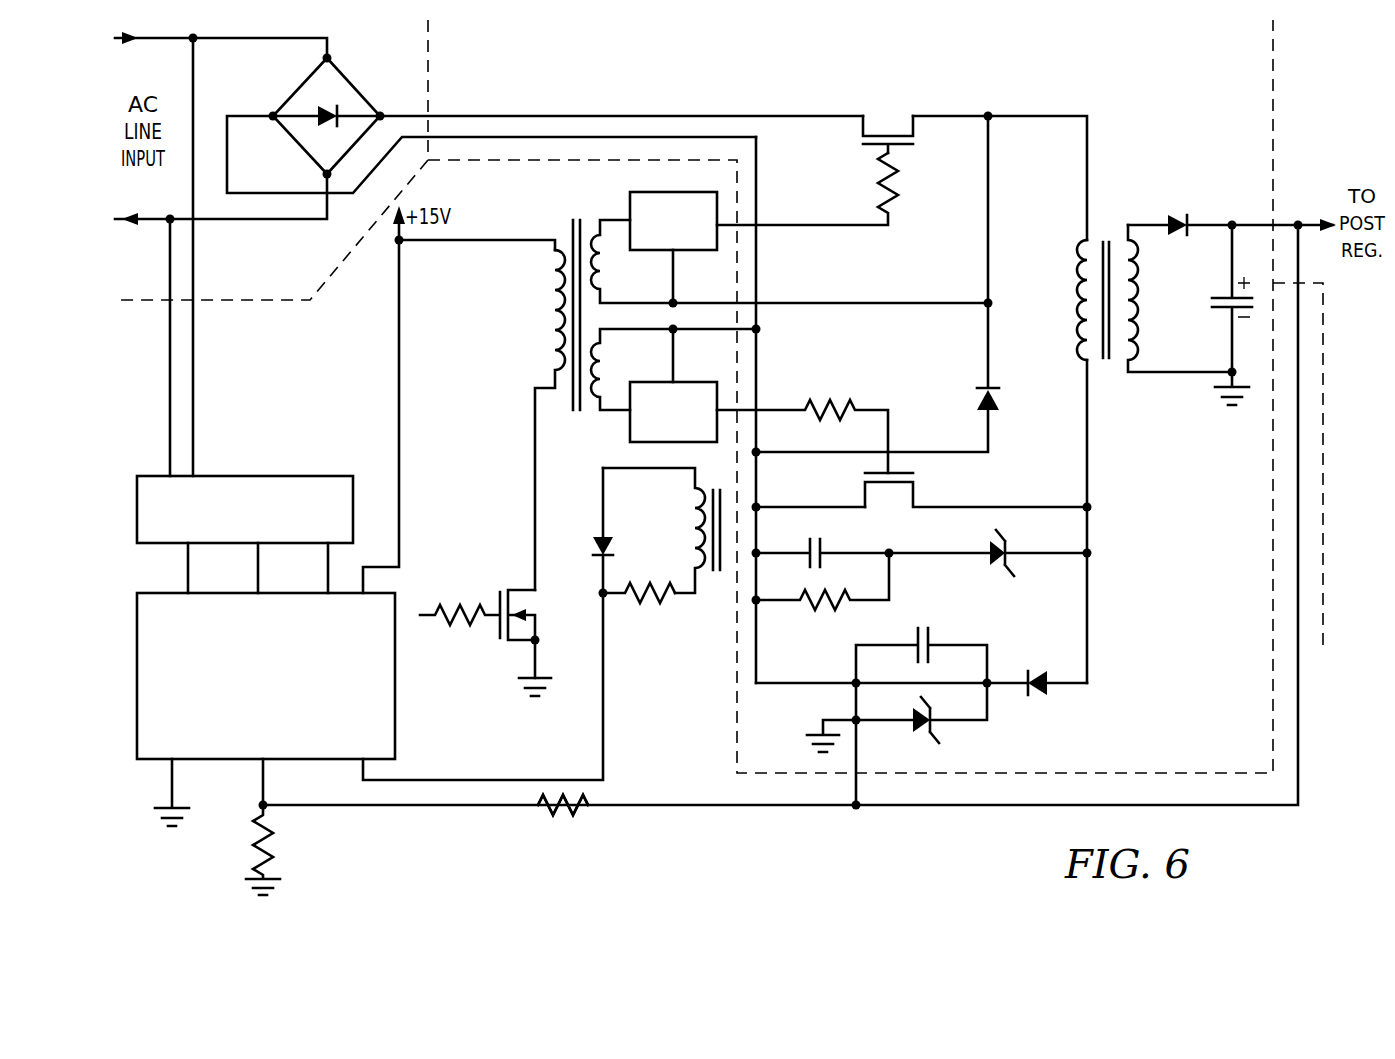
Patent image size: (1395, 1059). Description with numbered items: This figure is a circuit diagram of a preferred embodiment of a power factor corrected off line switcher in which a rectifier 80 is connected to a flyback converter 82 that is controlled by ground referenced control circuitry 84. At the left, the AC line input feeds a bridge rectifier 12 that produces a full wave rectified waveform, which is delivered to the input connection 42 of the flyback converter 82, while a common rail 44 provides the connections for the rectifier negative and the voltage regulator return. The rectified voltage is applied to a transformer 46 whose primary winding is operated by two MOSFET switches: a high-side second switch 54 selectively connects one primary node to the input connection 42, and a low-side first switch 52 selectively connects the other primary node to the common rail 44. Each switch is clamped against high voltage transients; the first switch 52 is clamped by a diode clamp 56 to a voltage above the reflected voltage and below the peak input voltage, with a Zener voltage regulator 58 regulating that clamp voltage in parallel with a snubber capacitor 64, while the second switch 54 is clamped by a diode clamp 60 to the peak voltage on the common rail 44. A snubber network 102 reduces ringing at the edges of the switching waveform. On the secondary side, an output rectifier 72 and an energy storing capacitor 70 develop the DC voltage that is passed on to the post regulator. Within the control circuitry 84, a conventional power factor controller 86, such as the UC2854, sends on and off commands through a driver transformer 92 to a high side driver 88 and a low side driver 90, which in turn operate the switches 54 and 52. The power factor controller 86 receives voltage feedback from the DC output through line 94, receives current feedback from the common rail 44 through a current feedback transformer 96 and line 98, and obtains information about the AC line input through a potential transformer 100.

The rectifier 12 is at (292, 86).
The input connection 42 is at (748, 115).
The common rail 44 is at (830, 505).
The transformer 46 is at (1108, 240).
The first switch 52 is at (915, 493).
The second switch 54 is at (883, 128).
The clamp 56 is at (1038, 700).
The voltage regulator 58 is at (830, 703).
The clamp 60 is at (1000, 390).
The snubber capacitor 64 is at (930, 633).
The energy storing capacitor 70 is at (1212, 300).
The output rectifier 72 is at (1180, 210).
The rectifier 80 is at (404, 65).
The flyback converter 82 is at (1071, 98).
The control circuitry 84 is at (284, 391).
The power factor controller 86 is at (400, 670).
The high side driver 88 is at (630, 200).
The low side driver 90 is at (630, 425).
The driver transformer 92 is at (545, 312).
The line 94 is at (1300, 765).
The current feedback transformer 96 is at (685, 535).
The line 98 is at (610, 770).
The potential transformer 100 is at (248, 476).
The snubber network 102 is at (905, 542).